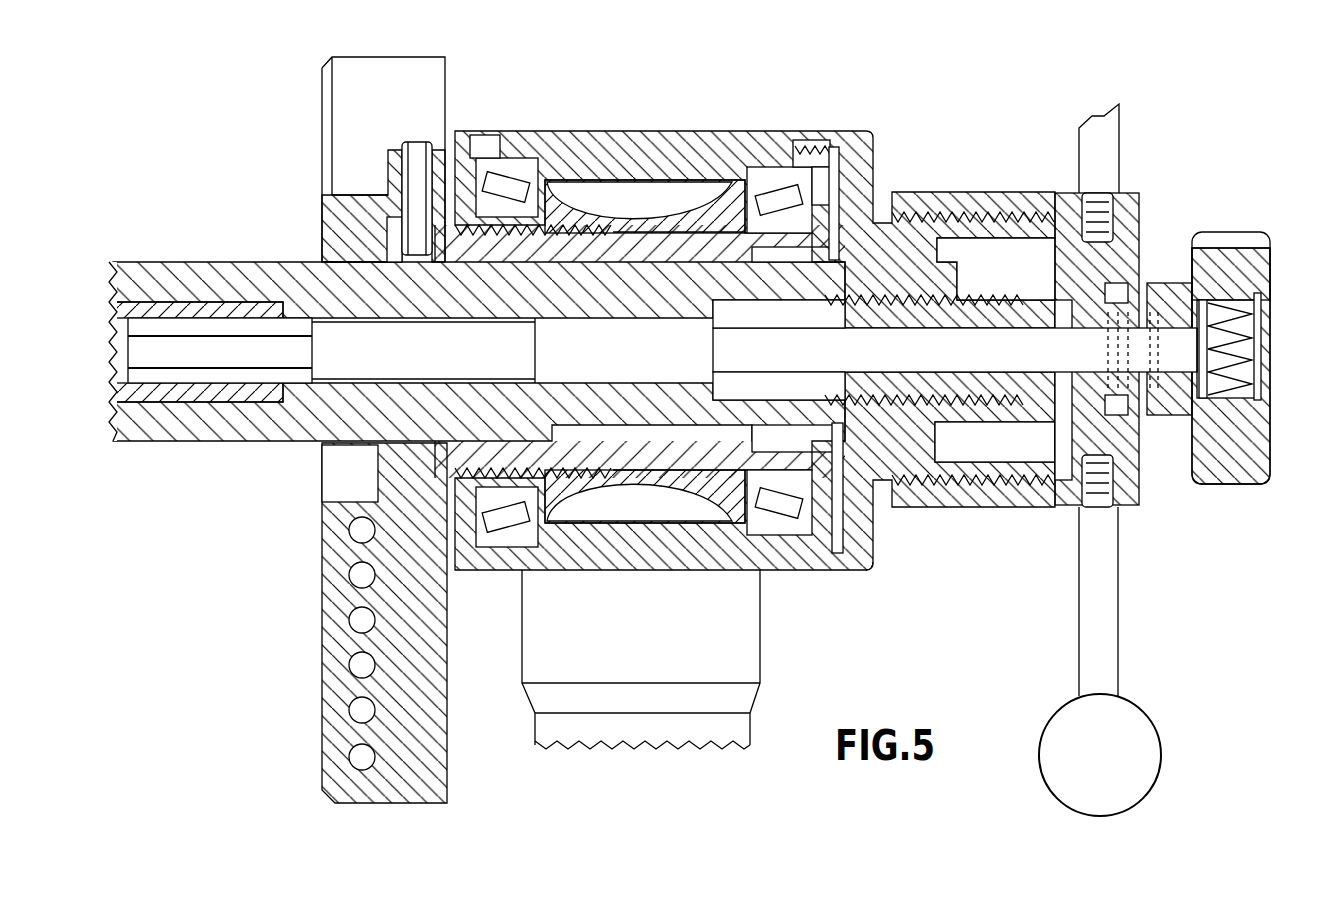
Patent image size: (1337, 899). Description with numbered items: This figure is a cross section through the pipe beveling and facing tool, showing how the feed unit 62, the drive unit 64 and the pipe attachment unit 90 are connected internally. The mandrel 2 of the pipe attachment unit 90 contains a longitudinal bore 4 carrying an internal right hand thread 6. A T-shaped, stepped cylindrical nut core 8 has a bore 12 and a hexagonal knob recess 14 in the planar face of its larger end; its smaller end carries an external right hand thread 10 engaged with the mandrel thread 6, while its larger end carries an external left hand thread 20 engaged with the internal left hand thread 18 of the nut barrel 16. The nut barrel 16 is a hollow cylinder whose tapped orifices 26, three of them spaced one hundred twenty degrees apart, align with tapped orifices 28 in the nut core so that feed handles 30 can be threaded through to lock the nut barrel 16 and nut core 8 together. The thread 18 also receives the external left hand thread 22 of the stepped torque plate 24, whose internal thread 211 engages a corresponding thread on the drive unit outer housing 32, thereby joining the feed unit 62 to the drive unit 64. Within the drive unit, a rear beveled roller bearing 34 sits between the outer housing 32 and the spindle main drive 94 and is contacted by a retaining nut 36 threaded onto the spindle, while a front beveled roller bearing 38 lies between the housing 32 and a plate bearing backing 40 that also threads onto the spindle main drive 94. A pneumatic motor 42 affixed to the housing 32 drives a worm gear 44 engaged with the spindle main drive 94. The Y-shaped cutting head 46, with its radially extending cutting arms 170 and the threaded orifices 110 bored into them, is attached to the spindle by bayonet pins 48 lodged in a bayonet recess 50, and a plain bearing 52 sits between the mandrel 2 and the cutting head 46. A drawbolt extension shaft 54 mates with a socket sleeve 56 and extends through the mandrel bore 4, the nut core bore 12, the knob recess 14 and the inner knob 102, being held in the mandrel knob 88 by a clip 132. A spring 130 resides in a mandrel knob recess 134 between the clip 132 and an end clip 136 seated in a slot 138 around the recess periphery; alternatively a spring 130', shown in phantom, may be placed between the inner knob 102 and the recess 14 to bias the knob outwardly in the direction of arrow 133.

The mandrel 2 is at (168, 262).
The longitudinal bore 4 is at (225, 335).
The internal mandrel right hand thread 6 is at (890, 335).
The nut core 8 is at (975, 300).
The external right hand thread 10 is at (1018, 300).
The nut core bore 12 is at (1005, 340).
The hexagonal knob recess 14 is at (1090, 305).
The nut barrel 16 is at (965, 190).
The internal left hand thread 18 is at (995, 439).
The external left hand thread 20 is at (1130, 505).
The torque plate external left hand thread 22 is at (1020, 510).
The torque plate 24 is at (845, 575).
The tapped orifices 26 is at (1100, 192).
The tapped orifices 28 is at (1130, 240).
The feed handles 30 is at (1079, 665).
The drive unit outer housing 32 is at (732, 130).
The rear beveled roller bearing 34 is at (777, 172).
The retaining nut 36 is at (850, 200).
The front beveled roller bearing 38 is at (505, 172).
The plate bearing backing 40 is at (482, 135).
The pneumatic motor 42 is at (522, 650).
The worm gear 44 is at (652, 490).
The cutting head 46 is at (345, 117).
The bayonet pin 48 is at (415, 150).
The bayonet recess 50 is at (440, 270).
The plain bearing 52 is at (320, 260).
The drawbolt extension shaft 54 is at (245, 365).
The socket sleeve 56 is at (120, 355).
The feed unit 62 is at (1182, 620).
The drive unit 64 is at (680, 122).
The mandrel knob 88 is at (1270, 482).
The pipe attachment unit 90 is at (158, 466).
The spindle main drive 94 is at (682, 245).
The inner knob 102 is at (1166, 288).
The threaded orifices 110 is at (350, 663).
The spring 130 is at (1270, 349).
The spring 130' is at (1090, 350).
The clip 132 is at (1200, 380).
The arrow 133 is at (1256, 525).
The mandrel knob recess 134 is at (1240, 375).
The end clip 136 is at (1258, 330).
The slot 138 is at (1240, 260).
The cutting arms 170 is at (325, 590).
The internal thread 211 is at (815, 148).